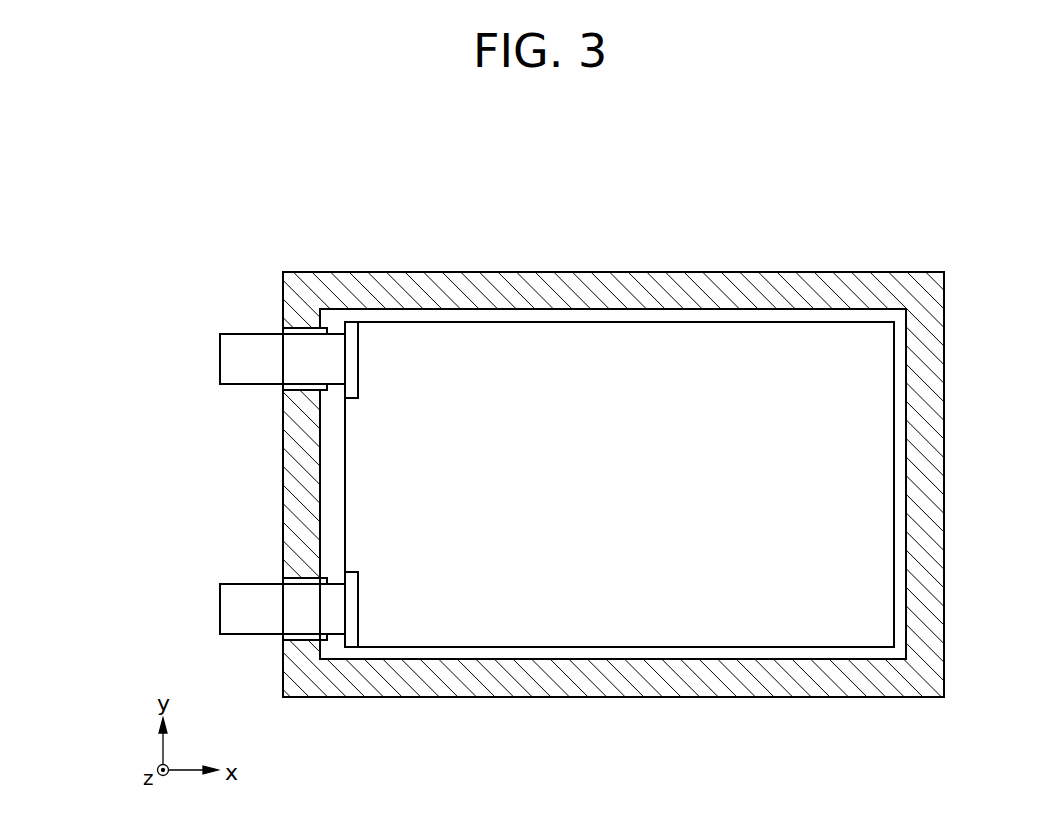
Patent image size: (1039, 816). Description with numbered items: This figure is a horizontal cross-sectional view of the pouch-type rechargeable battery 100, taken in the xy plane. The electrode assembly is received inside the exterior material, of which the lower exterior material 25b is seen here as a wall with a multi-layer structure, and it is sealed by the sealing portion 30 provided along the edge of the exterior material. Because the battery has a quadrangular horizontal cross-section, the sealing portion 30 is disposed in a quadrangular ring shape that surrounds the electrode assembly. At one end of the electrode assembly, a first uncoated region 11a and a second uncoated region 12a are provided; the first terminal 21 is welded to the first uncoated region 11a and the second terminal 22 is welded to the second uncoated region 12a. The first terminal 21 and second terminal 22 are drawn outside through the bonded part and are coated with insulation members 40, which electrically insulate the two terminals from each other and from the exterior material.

The pouch-type rechargeable battery 100 is at (645, 203).
The sealing portion 30 is at (525, 290).
The lower exterior material 25b is at (944, 453).
The first uncoated region 11a is at (353, 347).
The second uncoated region 12a is at (353, 620).
The first terminal 21 is at (232, 358).
The second terminal 22 is at (232, 608).
The insulation member 40 is at (285, 581).